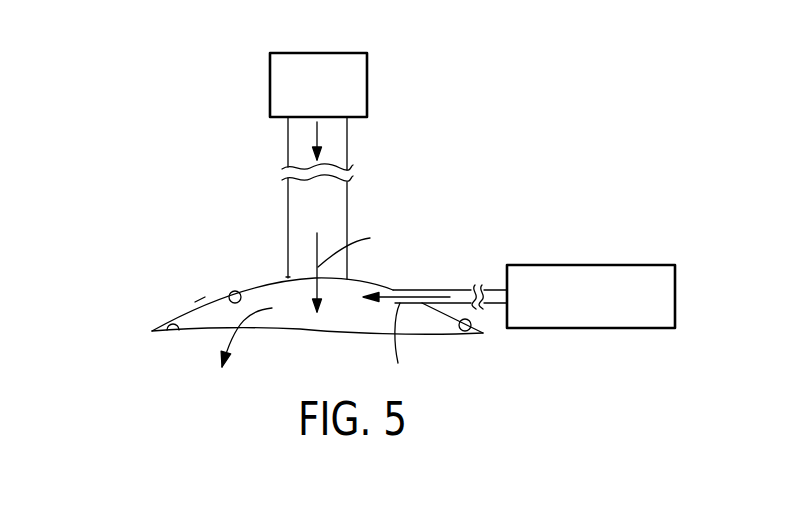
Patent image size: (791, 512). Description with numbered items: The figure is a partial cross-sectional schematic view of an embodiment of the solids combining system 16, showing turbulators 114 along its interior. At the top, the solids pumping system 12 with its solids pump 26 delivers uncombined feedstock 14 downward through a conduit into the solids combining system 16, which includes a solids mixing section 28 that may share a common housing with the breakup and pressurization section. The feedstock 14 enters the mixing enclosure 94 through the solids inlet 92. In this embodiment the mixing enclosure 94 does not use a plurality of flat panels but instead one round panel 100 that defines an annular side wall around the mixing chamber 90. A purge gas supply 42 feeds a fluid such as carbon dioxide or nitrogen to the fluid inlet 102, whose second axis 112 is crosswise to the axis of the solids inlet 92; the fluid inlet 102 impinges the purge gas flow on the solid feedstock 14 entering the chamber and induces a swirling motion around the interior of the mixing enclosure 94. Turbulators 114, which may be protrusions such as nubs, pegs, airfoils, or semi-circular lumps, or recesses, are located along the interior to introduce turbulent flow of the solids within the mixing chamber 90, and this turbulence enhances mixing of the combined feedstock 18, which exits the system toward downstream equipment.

The solids pumping system 12 is at (258, 80).
The uncombined feedstock 14 is at (318, 134).
The solids combining system 16 is at (542, 148).
The combined feedstock 18 is at (237, 336).
The solids pump 26 is at (317, 53).
The solids mixing section 28 is at (395, 218).
The purge gas supply 42 is at (590, 265).
The mixing chamber 90 is at (357, 328).
The solids inlet 92 is at (287, 277).
The mixing enclosure 94 is at (200, 305).
The round panel 100 is at (180, 317).
The fluid inlet 102 is at (400, 347).
The second axis 112 is at (445, 297).
The turbulators 114 is at (235, 291).